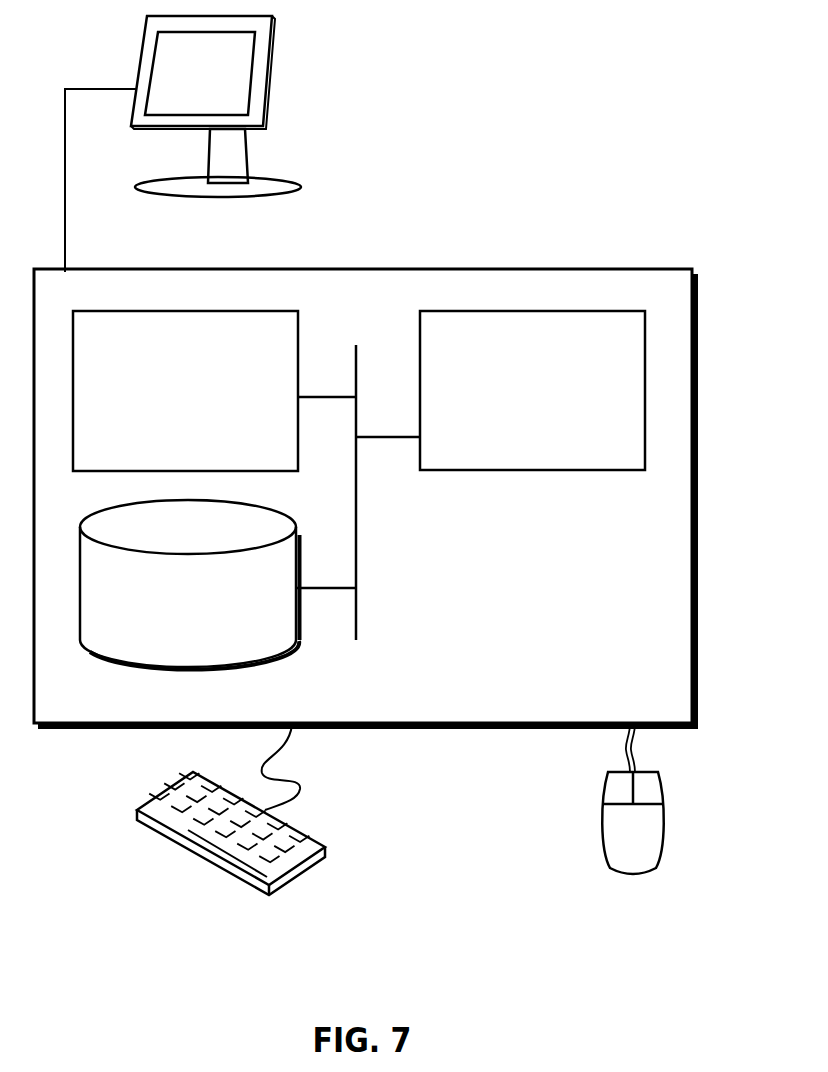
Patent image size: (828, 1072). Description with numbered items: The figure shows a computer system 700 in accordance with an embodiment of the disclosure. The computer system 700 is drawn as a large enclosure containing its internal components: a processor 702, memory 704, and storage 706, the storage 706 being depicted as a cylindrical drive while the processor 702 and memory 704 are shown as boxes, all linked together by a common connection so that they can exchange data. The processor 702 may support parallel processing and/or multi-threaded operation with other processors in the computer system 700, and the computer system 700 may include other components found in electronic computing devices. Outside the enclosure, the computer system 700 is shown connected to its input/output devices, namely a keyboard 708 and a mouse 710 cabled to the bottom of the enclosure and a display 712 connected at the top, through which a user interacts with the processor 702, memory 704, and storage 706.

The computer system 700 is at (410, 247).
The processor 702 is at (516, 402).
The memory 704 is at (166, 402).
The storage 706 is at (172, 613).
The keyboard 708 is at (155, 835).
The mouse 710 is at (612, 843).
The display 712 is at (183, 144).